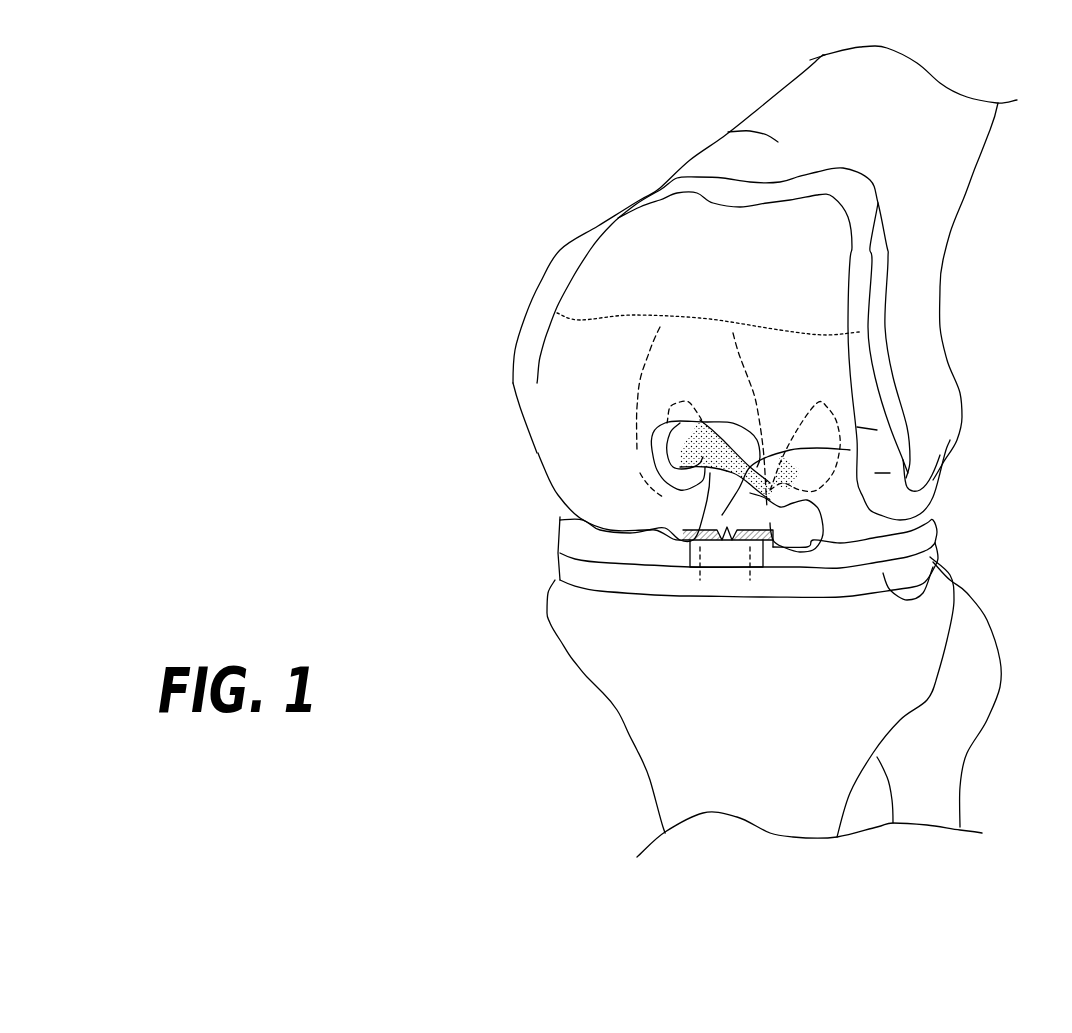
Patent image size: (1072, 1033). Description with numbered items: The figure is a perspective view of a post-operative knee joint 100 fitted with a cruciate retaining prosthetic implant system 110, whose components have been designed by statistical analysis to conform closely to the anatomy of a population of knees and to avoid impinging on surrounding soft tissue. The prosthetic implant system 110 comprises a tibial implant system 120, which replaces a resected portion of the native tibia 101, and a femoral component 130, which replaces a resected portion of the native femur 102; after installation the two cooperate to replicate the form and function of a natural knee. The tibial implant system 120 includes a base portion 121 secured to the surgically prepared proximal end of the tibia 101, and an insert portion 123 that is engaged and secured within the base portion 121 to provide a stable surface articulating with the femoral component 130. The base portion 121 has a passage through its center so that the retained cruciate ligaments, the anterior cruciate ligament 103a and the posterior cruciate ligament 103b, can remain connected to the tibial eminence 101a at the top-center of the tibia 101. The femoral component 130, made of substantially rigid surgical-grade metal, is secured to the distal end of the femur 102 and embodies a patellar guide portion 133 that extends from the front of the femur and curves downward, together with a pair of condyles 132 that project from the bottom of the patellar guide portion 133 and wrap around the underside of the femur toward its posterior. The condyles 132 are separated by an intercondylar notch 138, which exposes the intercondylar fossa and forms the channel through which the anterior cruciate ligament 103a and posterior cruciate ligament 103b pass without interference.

The knee joint 100 is at (275, 187).
The prosthetic implant system 110 is at (303, 348).
The tibia 101 is at (563, 620).
The tibial eminence 101a is at (822, 503).
The femur 102 is at (730, 133).
The anterior cruciate ligament 103a is at (850, 450).
The posterior cruciate ligament 103b is at (683, 443).
The tibial implant system 120 is at (532, 557).
The base portion 121 is at (927, 590).
The insert portion 123 is at (563, 545).
The femoral component 130 is at (660, 193).
The condyles 132 is at (587, 495).
The patellar guide portion 133 is at (698, 357).
The intercondylar notch 138 is at (731, 437).